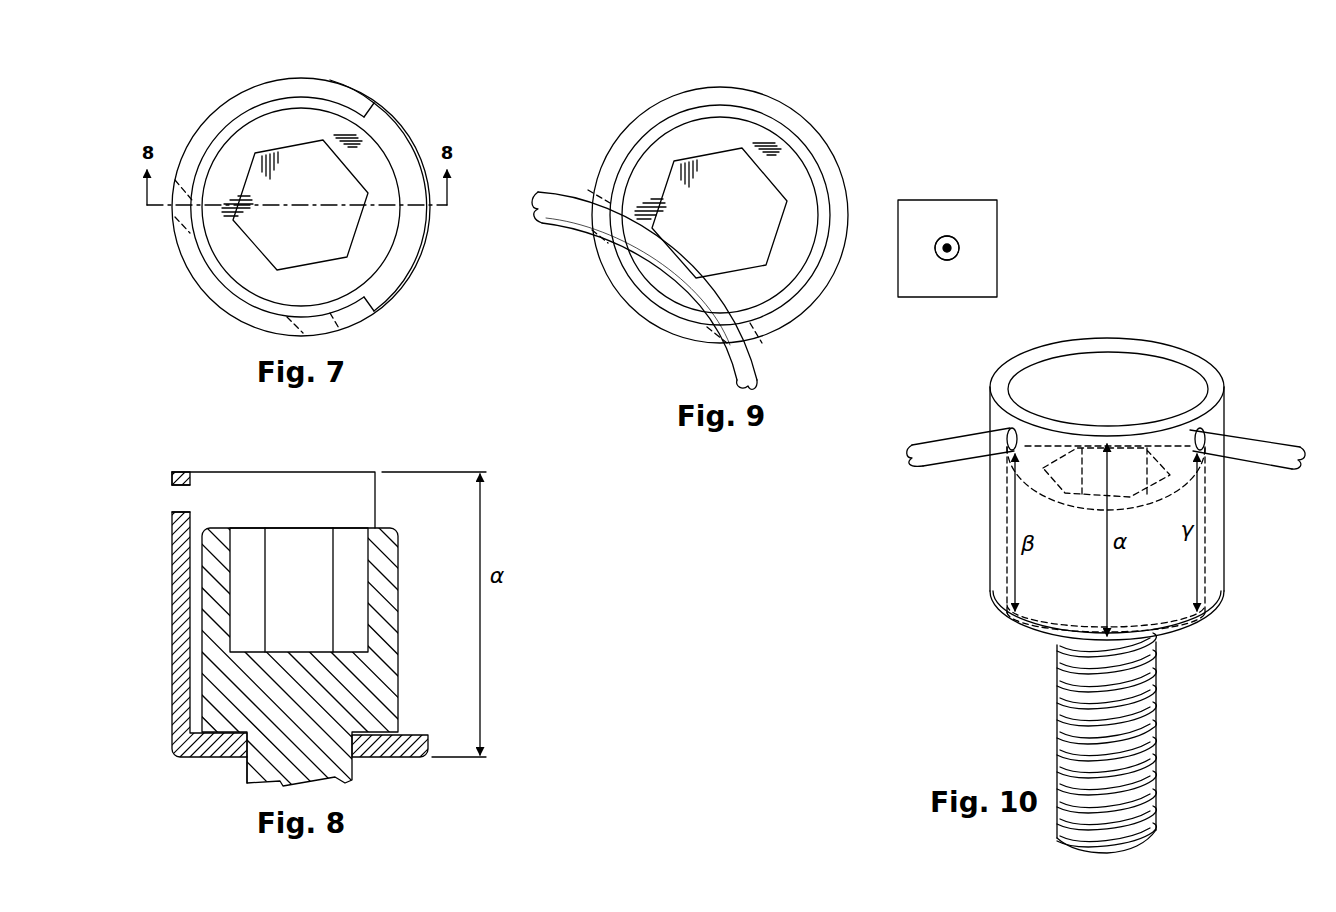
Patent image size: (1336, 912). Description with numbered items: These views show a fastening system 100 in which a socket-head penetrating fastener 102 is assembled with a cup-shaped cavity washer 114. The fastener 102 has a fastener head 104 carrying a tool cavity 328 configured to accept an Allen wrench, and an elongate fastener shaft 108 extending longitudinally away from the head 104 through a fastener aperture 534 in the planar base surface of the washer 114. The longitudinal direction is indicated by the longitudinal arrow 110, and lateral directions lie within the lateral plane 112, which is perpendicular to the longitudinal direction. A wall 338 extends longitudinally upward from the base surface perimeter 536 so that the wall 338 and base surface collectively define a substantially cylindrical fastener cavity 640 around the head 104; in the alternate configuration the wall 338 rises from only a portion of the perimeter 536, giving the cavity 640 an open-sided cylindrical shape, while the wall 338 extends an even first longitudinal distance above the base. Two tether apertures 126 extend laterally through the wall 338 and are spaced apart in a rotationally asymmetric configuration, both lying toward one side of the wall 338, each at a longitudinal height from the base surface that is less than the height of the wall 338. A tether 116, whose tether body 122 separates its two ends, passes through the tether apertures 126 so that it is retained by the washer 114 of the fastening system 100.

In FIG. 7, the fastening system 100 is at (197, 92).
In FIG. 8, the fastening system 100 is at (496, 529).
In FIG. 9, the fastening system 100 is at (814, 94).
In FIG. 10, the fastening system 100 is at (1228, 641).
In FIG. 7, the penetrating fastener 102 is at (391, 154).
In FIG. 8, the penetrating fastener 102 is at (402, 665).
In FIG. 9, the penetrating fastener 102 is at (730, 135).
In FIG. 10, the penetrating fastener 102 is at (1173, 680).
In FIG. 10, the fastener head 104 is at (1154, 567).
In FIG. 10, the fastener shaft 108 is at (1077, 718).
In FIG. 10, the longitudinal arrow 110 is at (947, 236).
In FIG. 10, the lateral plane 112 is at (946, 292).
In FIG. 7, the cavity washer 114 is at (366, 86).
In FIG. 8, the cavity washer 114 is at (395, 758).
In FIG. 9, the tether 116 is at (569, 228).
In FIG. 10, the tether 116 is at (1257, 427).
In FIG. 9, the tether body 122 is at (707, 285).
In FIG. 10, the tether body 122 is at (958, 443).
In FIG. 7, the tether apertures 126 is at (178, 208).
In FIG. 8, the tether apertures 126 is at (183, 498).
In FIG. 9, the tether apertures 126 is at (592, 203).
In FIG. 10, the tether apertures 126 is at (1200, 430).
In FIG. 9, the tool cavity 328 is at (743, 232).
In FIG. 7, the wall 338 is at (171, 247).
In FIG. 8, the wall 338 is at (170, 648).
In FIG. 9, the wall 338 is at (805, 137).
In FIG. 10, the wall 338 is at (1098, 343).
In FIG. 8, the fastener aperture 534 is at (247, 750).
In FIG. 7, the base surface perimeter 536 is at (398, 123).
In FIG. 10, the base surface perimeter 536 is at (1029, 632).
In FIG. 7, the fastener cavity 640 is at (393, 253).
In FIG. 8, the fastener cavity 640 is at (232, 497).
In FIG. 9, the fastener cavity 640 is at (818, 187).
In FIG. 10, the fastener cavity 640 is at (1138, 380).